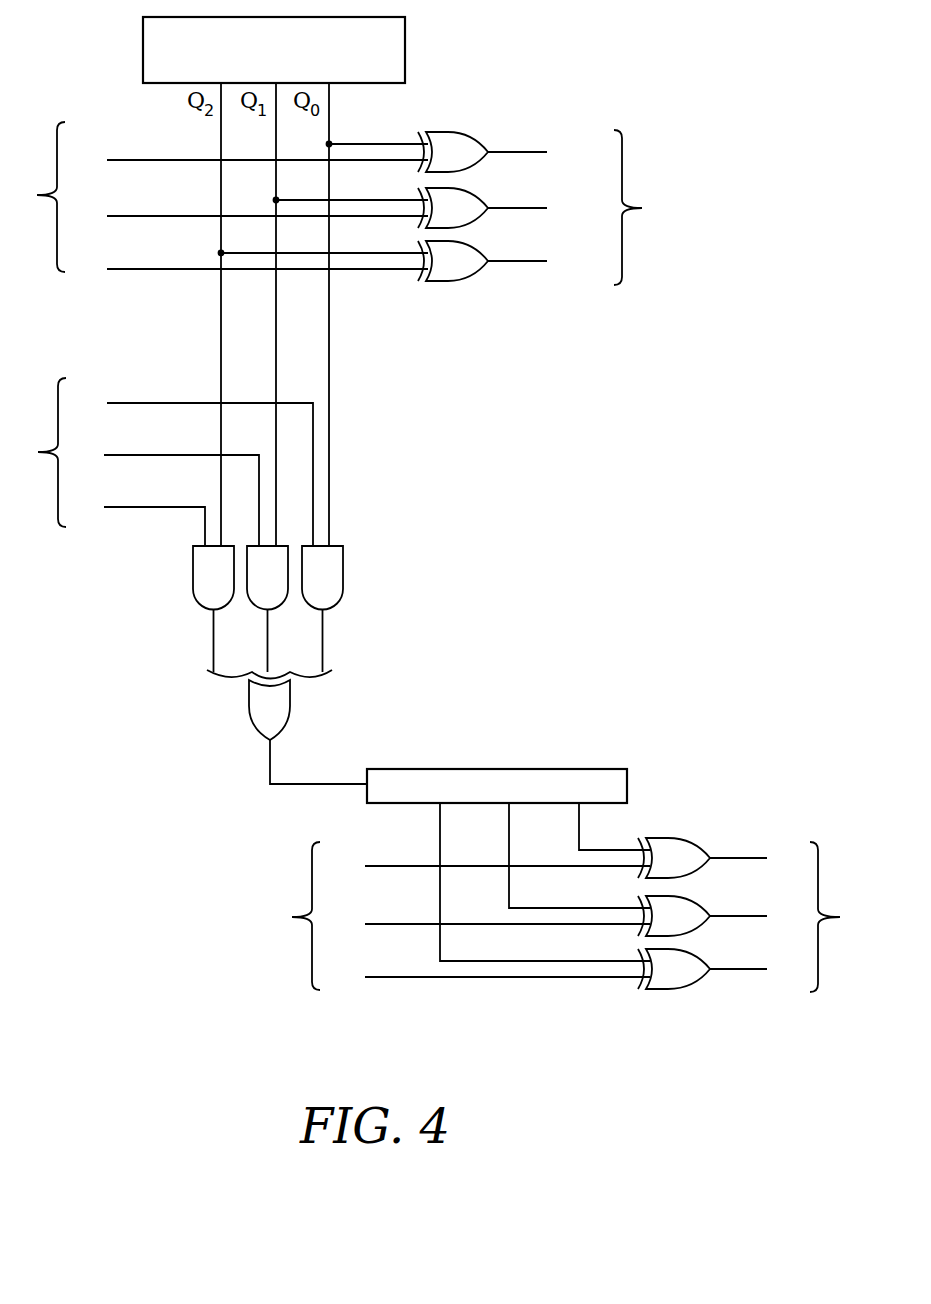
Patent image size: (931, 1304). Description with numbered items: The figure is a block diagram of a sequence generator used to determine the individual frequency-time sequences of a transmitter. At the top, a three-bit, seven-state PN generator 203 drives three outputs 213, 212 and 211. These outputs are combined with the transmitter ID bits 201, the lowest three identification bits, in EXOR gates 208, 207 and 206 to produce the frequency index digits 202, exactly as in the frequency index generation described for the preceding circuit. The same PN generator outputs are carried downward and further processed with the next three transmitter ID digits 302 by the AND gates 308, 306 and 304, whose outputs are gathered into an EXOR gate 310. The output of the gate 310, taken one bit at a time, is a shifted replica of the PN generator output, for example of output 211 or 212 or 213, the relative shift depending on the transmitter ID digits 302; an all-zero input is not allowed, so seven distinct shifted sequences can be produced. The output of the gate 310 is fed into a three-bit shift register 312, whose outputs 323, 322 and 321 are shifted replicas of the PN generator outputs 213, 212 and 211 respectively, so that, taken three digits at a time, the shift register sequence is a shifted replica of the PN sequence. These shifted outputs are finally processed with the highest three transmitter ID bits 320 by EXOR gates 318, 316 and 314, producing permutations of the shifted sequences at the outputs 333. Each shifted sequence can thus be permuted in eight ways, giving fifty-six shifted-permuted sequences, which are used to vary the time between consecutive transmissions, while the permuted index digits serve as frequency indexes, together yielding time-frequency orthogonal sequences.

The transmitter ID bits 201 is at (56, 120).
The index digits 202 is at (623, 130).
The PN generator 203 is at (405, 55).
The EXOR gate 206 is at (483, 143).
The EXOR gate 207 is at (483, 200).
The EXOR gate 208 is at (483, 253).
The PN generator output 211 is at (331, 136).
The PN generator output 212 is at (274, 150).
The PN generator output 213 is at (221, 149).
The transmitter ID digits 302 is at (60, 529).
The AND gate 304 is at (343, 568).
The AND gate 306 is at (286, 610).
The AND gate 308 is at (193, 582).
The EXOR gate 310 is at (249, 716).
The shift register 312 is at (627, 779).
The EXOR gate 314 is at (705, 849).
The EXOR gate 316 is at (705, 907).
The EXOR gate 318 is at (705, 960).
The transmitter ID bits 320 is at (315, 992).
The shift register output 321 is at (577, 810).
The shift register output 322 is at (507, 810).
The shift register output 323 is at (438, 810).
The outputs 333 is at (820, 840).